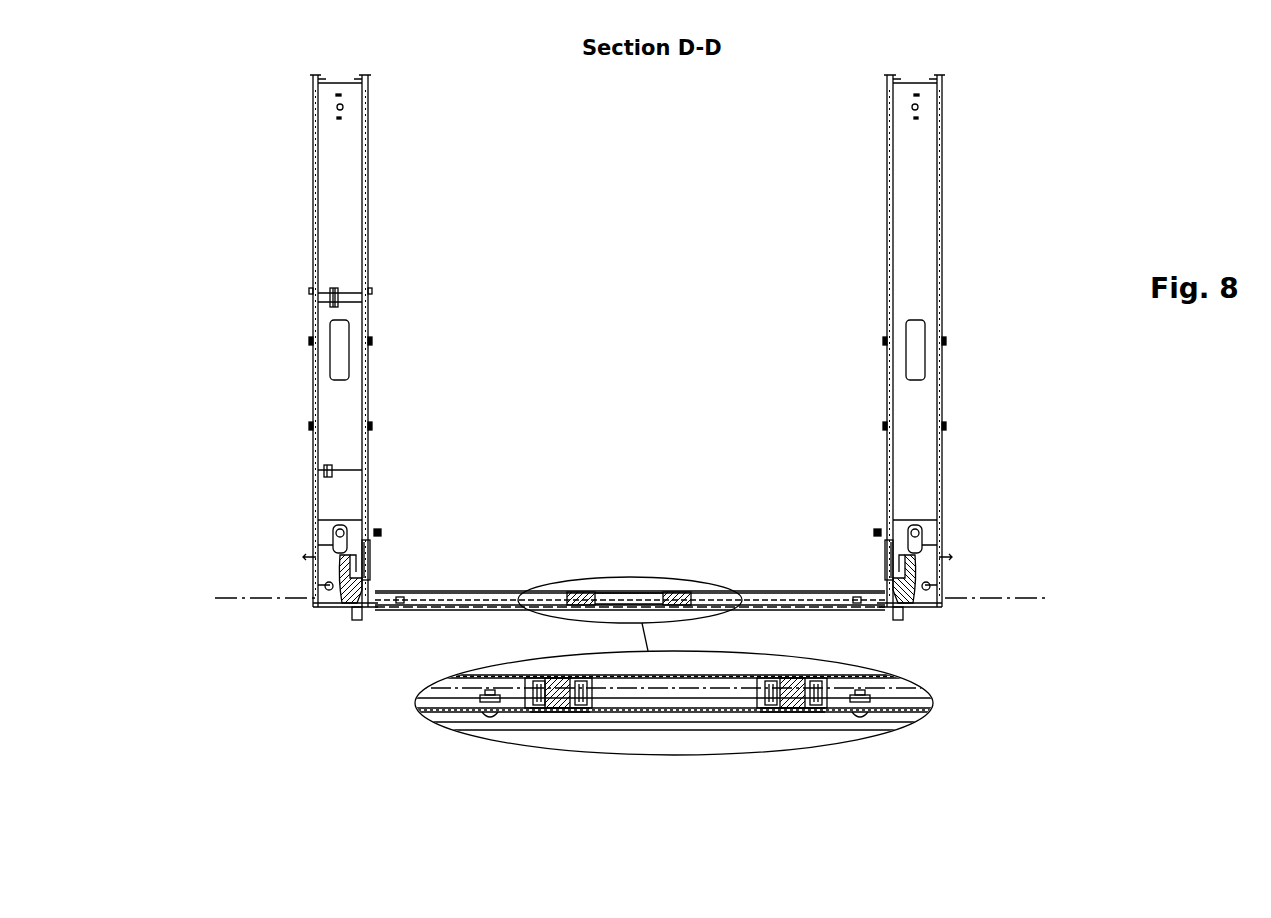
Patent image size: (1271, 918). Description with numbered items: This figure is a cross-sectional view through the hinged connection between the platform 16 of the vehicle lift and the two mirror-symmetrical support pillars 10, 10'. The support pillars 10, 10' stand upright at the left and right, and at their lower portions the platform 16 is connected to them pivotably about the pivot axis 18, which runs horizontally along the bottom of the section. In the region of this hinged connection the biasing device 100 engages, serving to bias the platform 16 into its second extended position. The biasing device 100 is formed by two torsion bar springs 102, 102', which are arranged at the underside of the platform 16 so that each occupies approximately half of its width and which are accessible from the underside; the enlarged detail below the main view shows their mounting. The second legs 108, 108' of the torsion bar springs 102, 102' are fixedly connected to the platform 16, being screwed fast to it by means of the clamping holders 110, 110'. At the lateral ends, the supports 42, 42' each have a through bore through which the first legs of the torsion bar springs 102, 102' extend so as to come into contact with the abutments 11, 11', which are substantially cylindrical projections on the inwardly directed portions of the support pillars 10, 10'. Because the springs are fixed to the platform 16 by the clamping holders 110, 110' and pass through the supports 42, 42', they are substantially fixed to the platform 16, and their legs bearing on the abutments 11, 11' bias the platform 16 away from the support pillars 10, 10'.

The support pillar 10 is at (299, 333).
The support pillar 10' is at (956, 327).
The abutment 11 is at (395, 494).
The abutment 11' is at (855, 483).
The platform 16 is at (462, 575).
The pivot axis 18 is at (248, 585).
The support 42 is at (287, 542).
The support 42' is at (999, 558).
The biasing device 100 is at (955, 625).
The torsion bar spring 102 is at (442, 757).
The torsion bar spring 102' is at (918, 753).
The second leg 108 is at (553, 664).
The second leg 108' is at (798, 664).
The clamping holder 110 is at (558, 766).
The clamping holder 110' is at (797, 771).